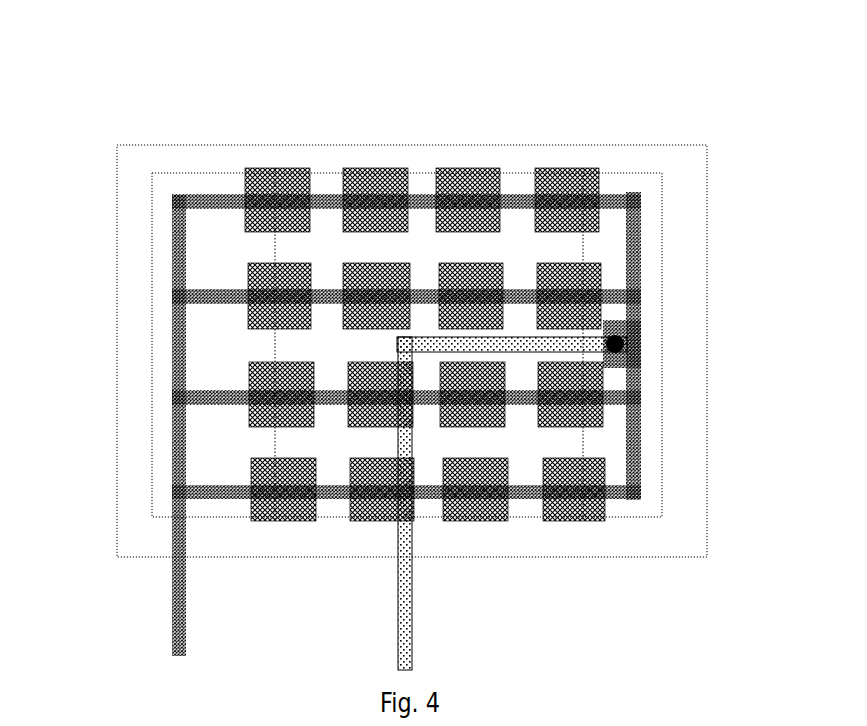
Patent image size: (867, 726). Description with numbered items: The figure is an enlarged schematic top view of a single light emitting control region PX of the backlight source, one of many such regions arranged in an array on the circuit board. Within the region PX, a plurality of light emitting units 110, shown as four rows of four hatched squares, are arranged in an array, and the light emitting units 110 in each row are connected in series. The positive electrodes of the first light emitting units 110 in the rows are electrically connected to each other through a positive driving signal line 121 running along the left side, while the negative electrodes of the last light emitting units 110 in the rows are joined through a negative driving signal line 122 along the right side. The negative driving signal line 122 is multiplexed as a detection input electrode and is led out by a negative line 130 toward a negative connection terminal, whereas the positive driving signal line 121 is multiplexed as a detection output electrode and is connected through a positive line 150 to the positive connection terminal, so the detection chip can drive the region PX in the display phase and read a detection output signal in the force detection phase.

The light emitting unit 110 is at (548, 168).
The positive driving signal line 121 is at (152, 228).
The negative driving signal line 122 is at (662, 232).
The negative line 130 is at (405, 617).
The positive line 150 is at (172, 626).
The light emitting control region PX is at (617, 145).